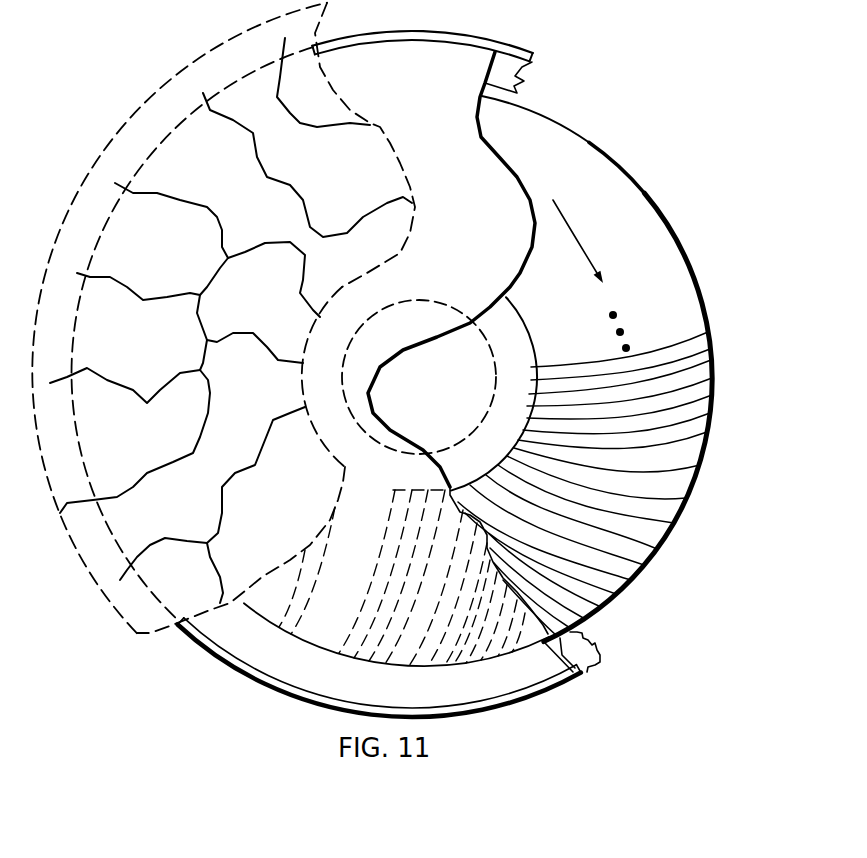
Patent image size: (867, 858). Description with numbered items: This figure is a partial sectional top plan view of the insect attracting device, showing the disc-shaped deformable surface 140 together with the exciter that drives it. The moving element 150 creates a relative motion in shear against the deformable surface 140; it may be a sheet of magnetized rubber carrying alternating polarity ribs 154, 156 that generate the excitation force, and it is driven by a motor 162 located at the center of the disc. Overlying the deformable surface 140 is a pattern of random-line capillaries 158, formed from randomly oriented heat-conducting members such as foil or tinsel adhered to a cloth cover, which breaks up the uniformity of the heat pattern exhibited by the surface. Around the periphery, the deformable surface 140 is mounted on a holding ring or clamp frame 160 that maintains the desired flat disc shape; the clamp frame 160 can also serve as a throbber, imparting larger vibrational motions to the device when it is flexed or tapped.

The deformable surface 140 is at (533, 217).
The moving element 150 is at (640, 172).
The alternating polarity rib 154 is at (700, 428).
The alternating polarity rib 156 is at (702, 408).
The capillaries 158 is at (133, 193).
The clamp frame 160 is at (538, 55).
The motor 162 is at (438, 386).